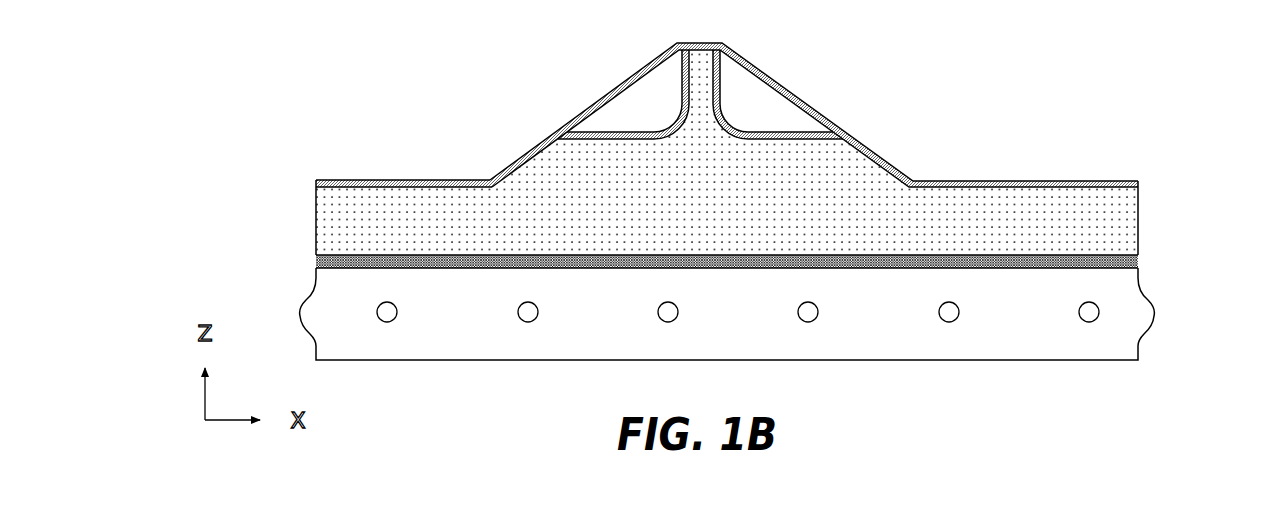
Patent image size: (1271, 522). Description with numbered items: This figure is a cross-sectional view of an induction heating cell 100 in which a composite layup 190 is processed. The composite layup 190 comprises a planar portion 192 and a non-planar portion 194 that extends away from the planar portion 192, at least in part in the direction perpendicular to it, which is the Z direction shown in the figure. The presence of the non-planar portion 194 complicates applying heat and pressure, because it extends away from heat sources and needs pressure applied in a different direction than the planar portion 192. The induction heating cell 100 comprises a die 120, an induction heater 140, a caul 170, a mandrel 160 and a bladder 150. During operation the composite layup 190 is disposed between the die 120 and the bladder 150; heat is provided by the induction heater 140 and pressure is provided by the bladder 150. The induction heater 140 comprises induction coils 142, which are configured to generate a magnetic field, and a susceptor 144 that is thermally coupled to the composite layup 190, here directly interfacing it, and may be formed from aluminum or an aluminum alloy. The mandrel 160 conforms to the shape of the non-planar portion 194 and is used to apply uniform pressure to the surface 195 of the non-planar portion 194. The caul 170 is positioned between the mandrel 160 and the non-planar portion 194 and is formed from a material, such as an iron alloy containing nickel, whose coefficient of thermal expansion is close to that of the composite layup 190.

The induction heating cell 100 is at (328, 79).
The die 120 is at (1055, 338).
The induction heater 140 is at (1160, 260).
The induction coils 142 is at (955, 322).
The susceptor 144 is at (1140, 262).
The bladder 150 is at (1058, 178).
The mandrel 160 is at (790, 127).
The caul 170 is at (720, 83).
The composite layup 190 is at (1140, 200).
The planar portion 192 is at (387, 180).
The non-planar portion 194 is at (682, 85).
The surface 195 is at (686, 106).